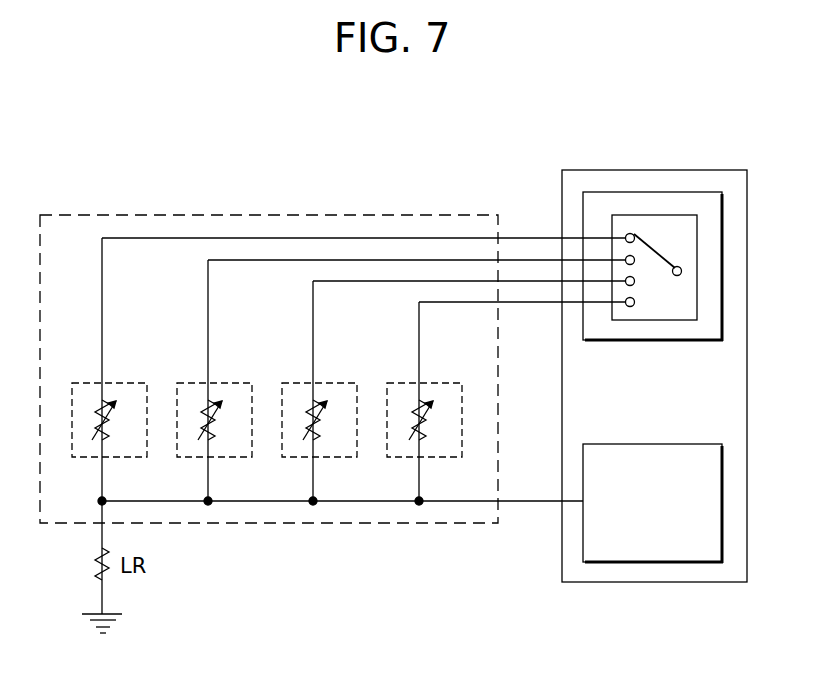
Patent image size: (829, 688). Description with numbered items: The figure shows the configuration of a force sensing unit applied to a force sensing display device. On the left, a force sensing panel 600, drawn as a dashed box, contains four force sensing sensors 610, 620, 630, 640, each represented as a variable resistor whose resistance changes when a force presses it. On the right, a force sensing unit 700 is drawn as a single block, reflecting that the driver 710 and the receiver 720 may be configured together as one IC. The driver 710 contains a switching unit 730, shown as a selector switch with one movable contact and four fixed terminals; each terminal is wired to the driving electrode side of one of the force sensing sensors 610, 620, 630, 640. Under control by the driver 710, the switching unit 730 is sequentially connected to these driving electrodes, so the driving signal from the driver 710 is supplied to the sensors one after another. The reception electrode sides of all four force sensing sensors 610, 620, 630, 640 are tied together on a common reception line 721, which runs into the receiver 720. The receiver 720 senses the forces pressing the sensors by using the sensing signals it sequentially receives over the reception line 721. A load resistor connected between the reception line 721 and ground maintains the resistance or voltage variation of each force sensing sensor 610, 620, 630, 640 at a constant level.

The force sensing panel 600 is at (315, 212).
The force sensing sensor 610 is at (127, 381).
The force sensing sensor 620 is at (232, 381).
The force sensing sensor 630 is at (337, 381).
The force sensing sensor 640 is at (442, 381).
The force sensing unit 700 is at (630, 170).
The driver 710 is at (688, 192).
The receiver 720 is at (634, 516).
The reception line 721 is at (519, 503).
The switching unit 730 is at (665, 322).